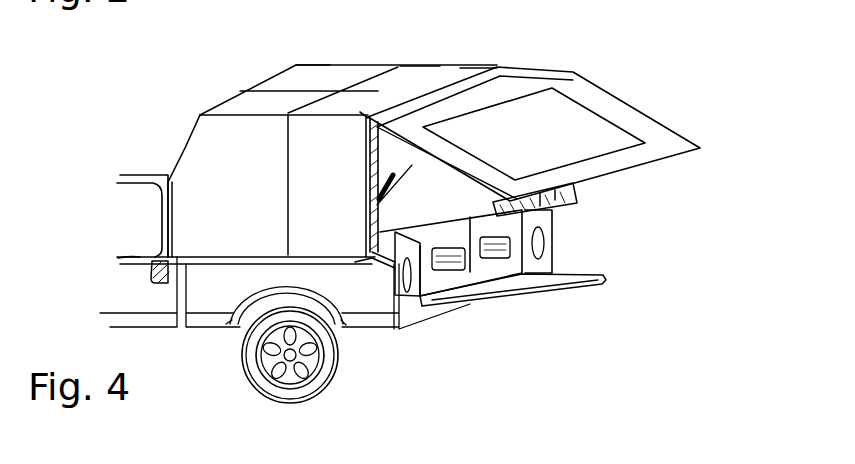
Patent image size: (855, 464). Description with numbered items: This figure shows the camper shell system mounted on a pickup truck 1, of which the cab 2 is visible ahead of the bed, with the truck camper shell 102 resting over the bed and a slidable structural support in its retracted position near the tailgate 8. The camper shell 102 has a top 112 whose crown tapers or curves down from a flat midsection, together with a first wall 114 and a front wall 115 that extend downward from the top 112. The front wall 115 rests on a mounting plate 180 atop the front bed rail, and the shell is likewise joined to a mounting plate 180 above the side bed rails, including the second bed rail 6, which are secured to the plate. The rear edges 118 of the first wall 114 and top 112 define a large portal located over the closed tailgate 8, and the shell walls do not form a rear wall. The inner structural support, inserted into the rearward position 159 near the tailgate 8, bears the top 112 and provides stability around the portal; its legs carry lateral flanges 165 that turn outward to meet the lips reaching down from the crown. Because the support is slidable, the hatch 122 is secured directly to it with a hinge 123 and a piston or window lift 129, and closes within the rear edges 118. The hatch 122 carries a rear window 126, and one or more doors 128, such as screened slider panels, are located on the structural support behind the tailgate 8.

The pickup truck 1 is at (135, 173).
The cab 2 is at (112, 133).
The second bed rail 6 is at (542, 220).
The tailgate 8 is at (543, 298).
The truck camper shell 102 is at (270, 78).
The top 112 is at (353, 66).
The first wall 114 is at (250, 168).
The front wall 115 is at (183, 149).
The rear edges 118 is at (386, 118).
The hatch 122 is at (597, 100).
The hinge 123 is at (495, 78).
The rear window 126 is at (597, 128).
The doors 128 is at (488, 270).
The piston or window lift 129 is at (393, 183).
The rearward position 159 is at (415, 65).
The lateral flanges 165 is at (395, 232).
The mounting plate 180 is at (362, 262).